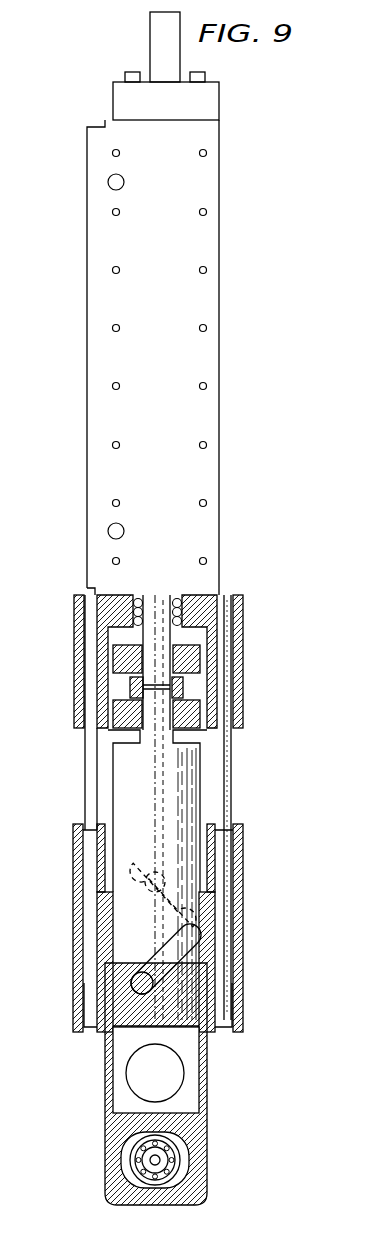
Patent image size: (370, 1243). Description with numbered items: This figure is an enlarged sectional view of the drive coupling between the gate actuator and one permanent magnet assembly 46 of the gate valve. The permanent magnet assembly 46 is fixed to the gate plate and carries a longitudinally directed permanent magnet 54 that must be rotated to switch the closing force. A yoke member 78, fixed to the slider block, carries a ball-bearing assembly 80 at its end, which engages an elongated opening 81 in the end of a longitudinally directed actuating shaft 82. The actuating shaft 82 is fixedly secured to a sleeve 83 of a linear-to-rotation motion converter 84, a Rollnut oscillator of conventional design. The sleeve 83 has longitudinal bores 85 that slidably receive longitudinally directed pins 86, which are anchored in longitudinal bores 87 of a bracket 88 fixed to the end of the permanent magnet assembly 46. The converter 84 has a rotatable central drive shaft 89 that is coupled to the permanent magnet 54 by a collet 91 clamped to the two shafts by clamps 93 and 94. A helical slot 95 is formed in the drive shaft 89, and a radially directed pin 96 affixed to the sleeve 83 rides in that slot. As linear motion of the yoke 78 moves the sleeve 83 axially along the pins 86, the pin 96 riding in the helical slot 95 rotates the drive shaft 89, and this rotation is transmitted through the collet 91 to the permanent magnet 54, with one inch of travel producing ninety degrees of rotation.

The permanent magnet assembly 46 is at (208, 295).
The permanent magnet 54 is at (157, 605).
The yoke member 78 is at (157, 1162).
The ball-bearing assembly 80 is at (118, 1157).
The elongated opening 81 is at (190, 1153).
The actuating shaft 82 is at (205, 1053).
The sleeve 83 is at (243, 920).
The linear-to-rotation motion converter 84 is at (168, 928).
The longitudinal bore 85 is at (228, 846).
The pin 86 is at (83, 782).
The longitudinal bore 87 is at (228, 635).
The bracket 88 is at (243, 606).
The drive shaft 89 is at (192, 752).
The collet 91 is at (184, 691).
The clamp 93 is at (112, 634).
The clamp 94 is at (120, 732).
The helical slot 95 is at (161, 928).
The radially directed pin 96 is at (138, 980).